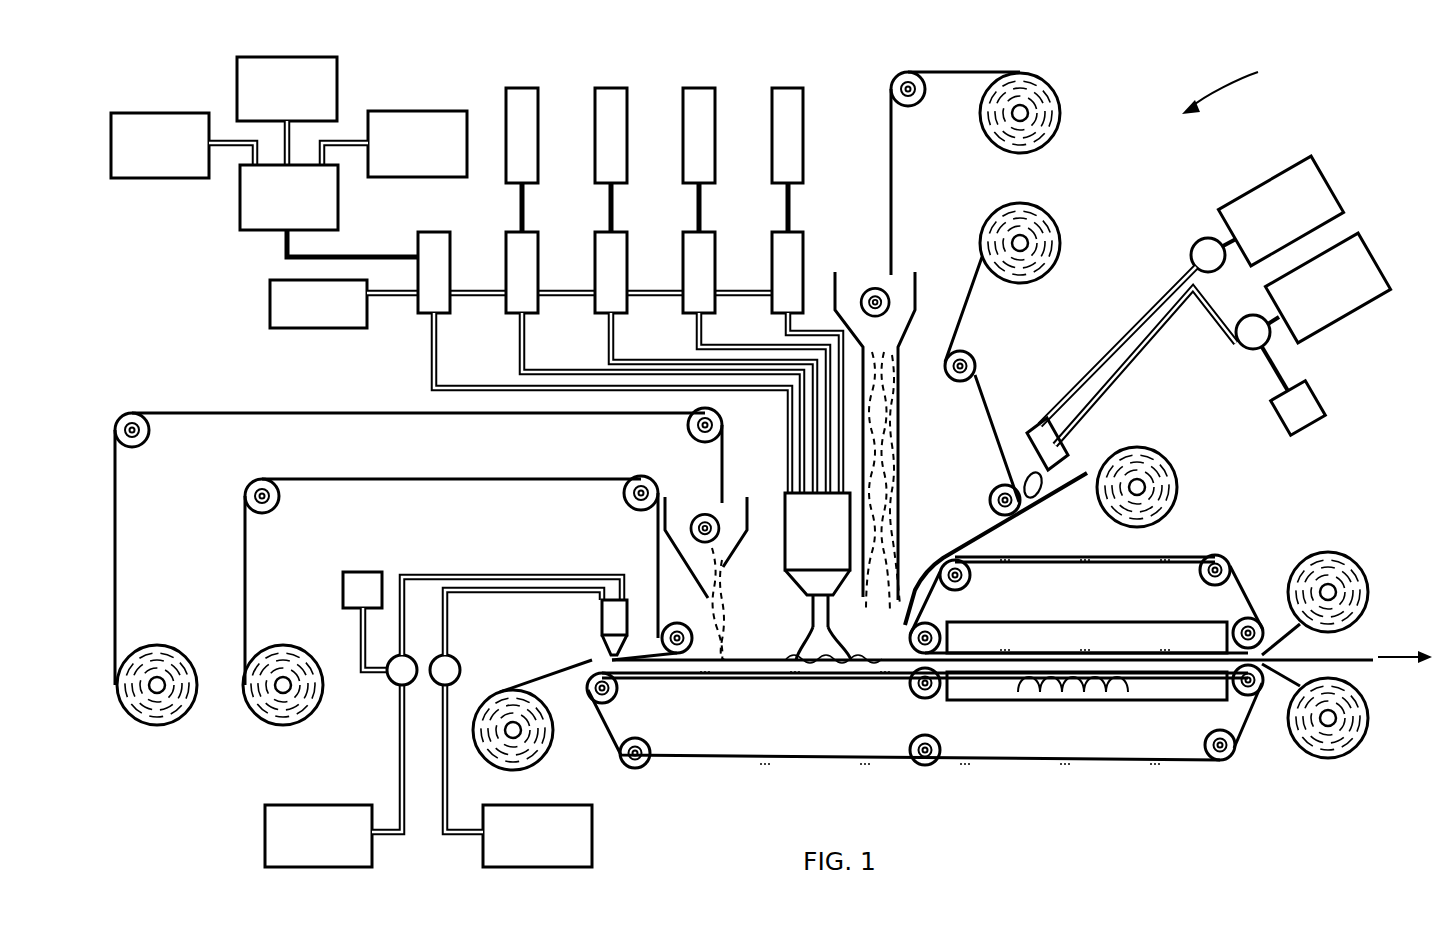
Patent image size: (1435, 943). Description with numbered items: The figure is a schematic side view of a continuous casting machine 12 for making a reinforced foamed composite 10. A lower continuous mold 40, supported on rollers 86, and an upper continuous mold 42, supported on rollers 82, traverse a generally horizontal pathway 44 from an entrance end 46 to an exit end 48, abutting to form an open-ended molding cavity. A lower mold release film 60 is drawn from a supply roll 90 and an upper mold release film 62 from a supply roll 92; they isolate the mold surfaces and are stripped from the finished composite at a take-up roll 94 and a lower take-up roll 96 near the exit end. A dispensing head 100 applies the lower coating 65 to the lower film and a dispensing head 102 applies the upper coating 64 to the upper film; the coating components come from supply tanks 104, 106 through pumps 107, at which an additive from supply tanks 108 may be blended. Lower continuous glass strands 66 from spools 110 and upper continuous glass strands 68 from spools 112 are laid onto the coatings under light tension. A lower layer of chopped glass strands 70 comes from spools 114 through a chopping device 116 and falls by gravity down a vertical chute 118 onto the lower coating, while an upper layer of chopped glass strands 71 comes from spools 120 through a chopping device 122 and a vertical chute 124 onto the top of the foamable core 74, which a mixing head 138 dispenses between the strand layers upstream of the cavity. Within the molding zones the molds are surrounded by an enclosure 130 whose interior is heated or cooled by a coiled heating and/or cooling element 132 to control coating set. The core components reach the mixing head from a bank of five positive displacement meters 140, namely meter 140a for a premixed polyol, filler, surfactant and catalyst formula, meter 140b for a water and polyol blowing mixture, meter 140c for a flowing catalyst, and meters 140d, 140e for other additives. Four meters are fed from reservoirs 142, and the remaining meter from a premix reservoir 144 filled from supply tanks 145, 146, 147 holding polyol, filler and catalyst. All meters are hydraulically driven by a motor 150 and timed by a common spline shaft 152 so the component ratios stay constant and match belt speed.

The reinforced foamed composite 10 is at (1362, 658).
The continuous casting machine 12 is at (1238, 86).
The lower continuous mold 40 is at (1070, 770).
The upper continuous mold 42 is at (1262, 570).
The horizontal pathway 44 is at (1395, 660).
The entrance end 46 is at (578, 648).
The exit end 48 is at (1274, 618).
The lower mold release film 60 is at (505, 692).
The upper mold release film 62 is at (1042, 478).
The upper coating 64 is at (1020, 505).
The lower coating 65 is at (650, 663).
The lower continuous glass strands 66 is at (405, 480).
The upper continuous glass strands 68 is at (965, 350).
The lower layer of chopped glass strands 70 is at (742, 656).
The upper layer of chopped glass strands 71 is at (905, 605).
The foamable core 74 is at (822, 660).
The rollers 82 is at (948, 590).
The rollers 86 is at (645, 705).
The supply roll 90 is at (545, 757).
The supply roll 92 is at (1172, 472).
The take-up roll 94 is at (1352, 556).
The lower take-up roll 96 is at (1305, 752).
The dispensing head 100 is at (607, 575).
The dispensing head 102 is at (1052, 430).
The supply tank 104 is at (1262, 200).
The supply tank 106 is at (1320, 320).
The pumps 107 is at (1195, 248).
The supply tanks 108 is at (1300, 428).
The spools 110 is at (310, 648).
The spools 112 is at (1048, 218).
The spools 114 is at (185, 648).
The chopping device 116 is at (700, 515).
The vertical chute 118 is at (720, 565).
The spools 120 is at (1062, 125).
The chopping device 122 is at (872, 292).
The vertical chute 124 is at (910, 320).
The enclosure 130 is at (1085, 628).
The coiled heating and/or cooling element 132 is at (1078, 690).
The mixing head 138 is at (840, 549).
The positive displacement meters 140 is at (594, 344).
The meter 140a is at (434, 232).
The meter 140b is at (522, 232).
The meter 140c is at (611, 232).
The meter 140d is at (699, 232).
The meter 140e is at (788, 232).
The reservoirs 142 is at (788, 92).
The premix reservoir 144 is at (255, 202).
The supply tank 145 is at (155, 170).
The supply tank 146 is at (240, 88).
The supply tank 147 is at (400, 125).
The motor 150 is at (287, 307).
The common spline shaft 152 is at (385, 298).